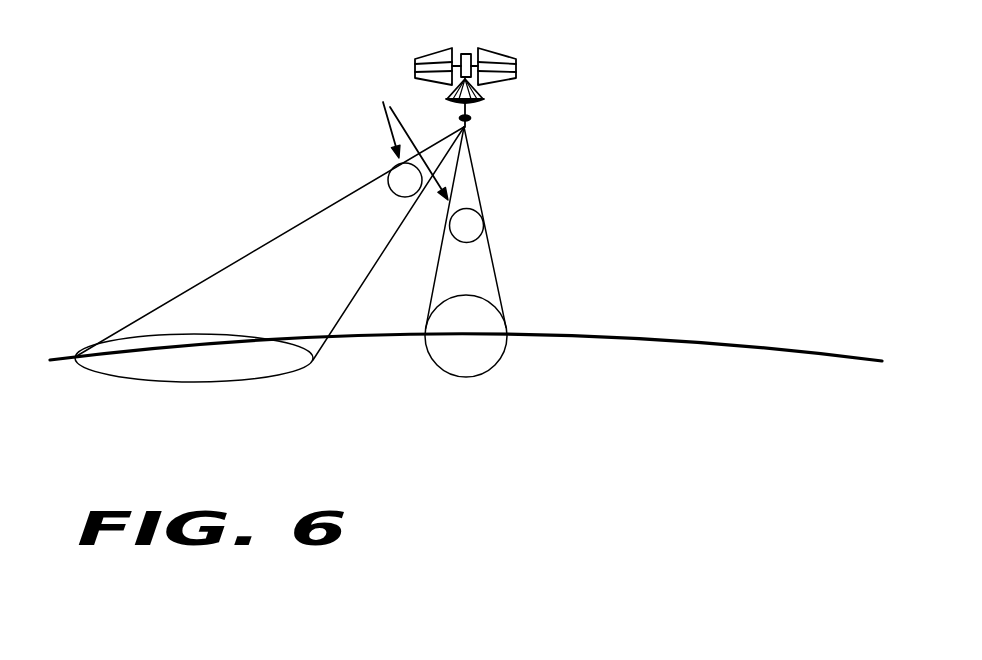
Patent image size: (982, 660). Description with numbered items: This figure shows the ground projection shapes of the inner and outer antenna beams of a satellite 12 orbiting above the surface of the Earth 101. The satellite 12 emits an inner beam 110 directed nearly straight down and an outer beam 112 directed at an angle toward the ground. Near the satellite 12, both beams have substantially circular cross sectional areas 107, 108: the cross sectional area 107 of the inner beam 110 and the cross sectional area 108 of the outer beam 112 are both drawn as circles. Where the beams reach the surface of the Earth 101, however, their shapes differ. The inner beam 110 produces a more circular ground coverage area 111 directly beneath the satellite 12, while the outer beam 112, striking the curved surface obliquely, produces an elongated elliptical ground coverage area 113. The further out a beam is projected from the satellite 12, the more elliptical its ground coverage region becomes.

The satellite 12 is at (523, 65).
The surface of the Earth 101 is at (850, 355).
The cross sectional area 107 is at (482, 223).
The cross sectional area 108 is at (395, 178).
The inner beam 110 is at (393, 112).
The ground coverage area 111 is at (490, 358).
The outer beam 112 is at (390, 128).
The elliptical ground coverage area 113 is at (257, 368).